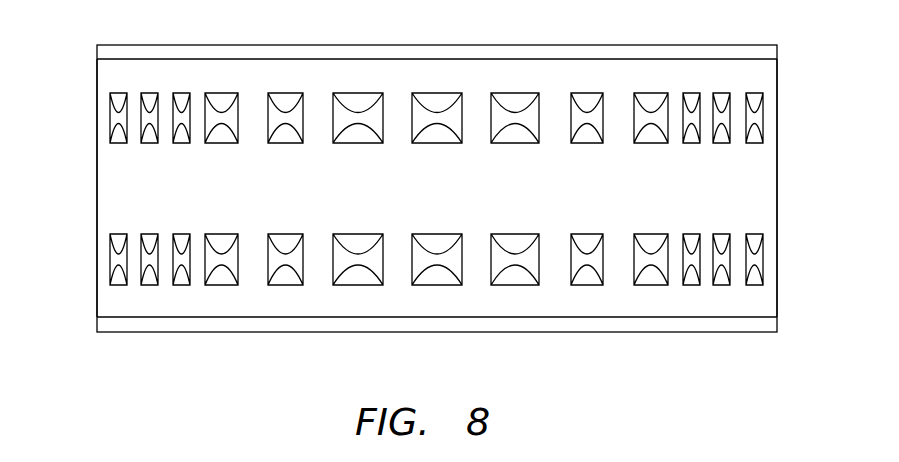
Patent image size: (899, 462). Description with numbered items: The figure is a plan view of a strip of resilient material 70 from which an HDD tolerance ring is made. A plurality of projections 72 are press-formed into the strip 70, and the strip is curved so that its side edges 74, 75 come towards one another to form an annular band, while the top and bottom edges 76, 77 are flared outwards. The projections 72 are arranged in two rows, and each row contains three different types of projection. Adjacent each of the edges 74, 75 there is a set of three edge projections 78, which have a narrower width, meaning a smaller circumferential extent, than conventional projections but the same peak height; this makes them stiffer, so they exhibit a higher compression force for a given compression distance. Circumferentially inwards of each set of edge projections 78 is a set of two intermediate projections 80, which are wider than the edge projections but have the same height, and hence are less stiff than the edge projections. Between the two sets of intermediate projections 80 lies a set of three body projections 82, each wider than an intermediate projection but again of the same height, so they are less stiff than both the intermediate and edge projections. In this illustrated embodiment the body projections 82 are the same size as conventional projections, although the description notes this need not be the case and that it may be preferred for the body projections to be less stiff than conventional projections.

The strip of resilient material 70 is at (748, 175).
The projections 72 is at (440, 145).
The edge 74 is at (778, 115).
The edge 75 is at (93, 183).
The top edge 76 is at (558, 52).
The bottom edge 77 is at (645, 322).
The edge projections 78 is at (192, 229).
The intermediate projections 80 is at (305, 229).
The body projections 82 is at (541, 229).